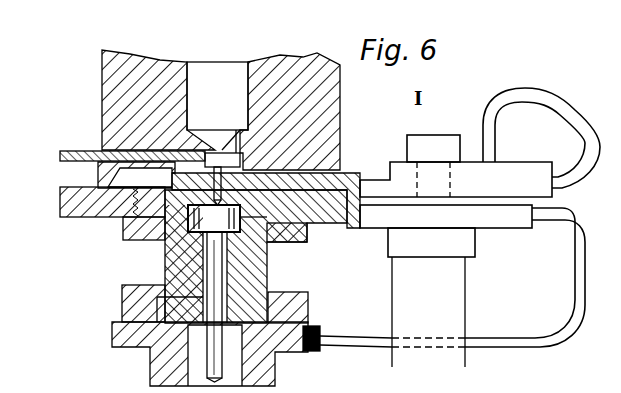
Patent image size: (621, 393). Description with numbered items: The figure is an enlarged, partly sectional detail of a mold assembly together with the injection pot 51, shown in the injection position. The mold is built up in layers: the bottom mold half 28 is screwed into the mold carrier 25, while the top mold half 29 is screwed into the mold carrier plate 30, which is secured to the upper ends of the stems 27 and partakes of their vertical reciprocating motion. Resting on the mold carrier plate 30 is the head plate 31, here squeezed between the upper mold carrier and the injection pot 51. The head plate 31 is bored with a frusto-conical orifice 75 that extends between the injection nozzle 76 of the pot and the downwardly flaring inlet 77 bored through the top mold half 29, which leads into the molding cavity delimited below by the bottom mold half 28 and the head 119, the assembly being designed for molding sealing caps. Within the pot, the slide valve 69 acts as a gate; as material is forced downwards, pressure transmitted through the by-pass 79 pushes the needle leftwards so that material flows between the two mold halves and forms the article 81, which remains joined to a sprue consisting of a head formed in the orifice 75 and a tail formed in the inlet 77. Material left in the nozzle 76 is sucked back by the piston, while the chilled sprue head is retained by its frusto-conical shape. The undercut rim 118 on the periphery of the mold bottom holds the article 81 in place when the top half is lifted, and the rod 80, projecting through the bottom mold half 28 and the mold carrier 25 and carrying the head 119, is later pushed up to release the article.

The injection pot 51 is at (102, 100).
The slide valve 69 is at (118, 150).
The frusto-conical orifice 75 is at (203, 146).
The injection nozzle 76 is at (219, 150).
The by-pass 79 is at (238, 150).
The undercut rim 118 is at (162, 190).
The head plate 31 is at (348, 180).
The mold carrier plate 30 is at (60, 203).
The top mold half 29 is at (123, 238).
The article 81 is at (167, 247).
The inlet 77 is at (165, 265).
The head 119 is at (260, 255).
The bottom mold half 28 is at (258, 286).
The rod 80 is at (122, 312).
The mold carrier 25 is at (162, 360).
The stem 27 is at (443, 296).